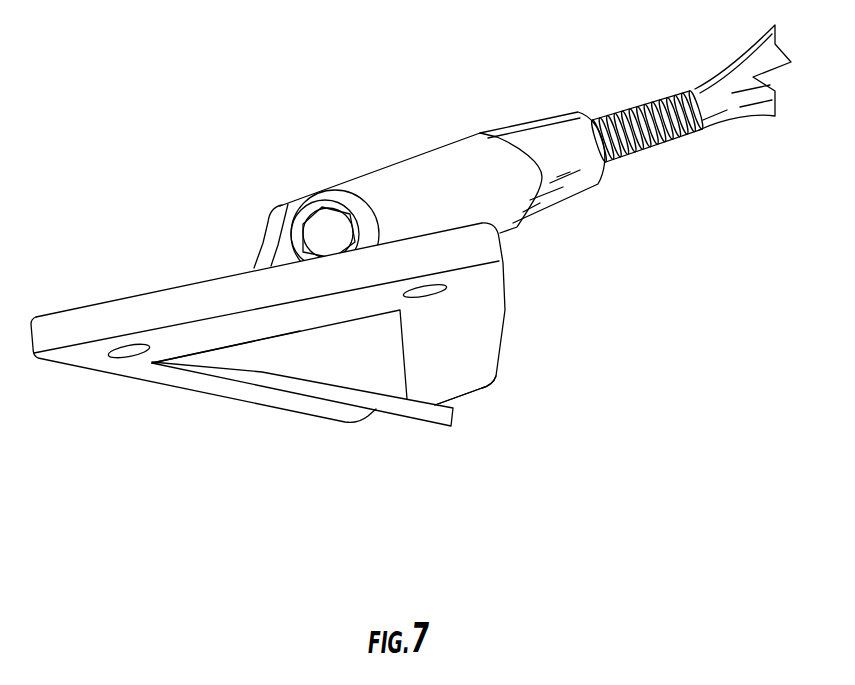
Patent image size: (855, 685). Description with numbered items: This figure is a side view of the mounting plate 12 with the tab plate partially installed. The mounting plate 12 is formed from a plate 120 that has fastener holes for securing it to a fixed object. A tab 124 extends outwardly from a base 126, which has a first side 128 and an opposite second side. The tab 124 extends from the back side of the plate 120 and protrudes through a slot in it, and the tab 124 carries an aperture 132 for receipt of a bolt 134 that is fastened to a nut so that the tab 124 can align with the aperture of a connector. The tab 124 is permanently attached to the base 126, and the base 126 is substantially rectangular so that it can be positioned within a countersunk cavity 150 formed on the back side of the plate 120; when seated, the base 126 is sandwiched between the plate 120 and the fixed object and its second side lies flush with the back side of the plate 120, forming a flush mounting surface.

The mounting plate 12 is at (111, 241).
The plate 120 is at (200, 333).
The tab 124 is at (333, 355).
The base 126 is at (432, 424).
The first side 128 is at (431, 403).
The aperture 132 is at (339, 223).
The bolt 134 is at (323, 200).
The countersunk cavity 150 is at (269, 357).